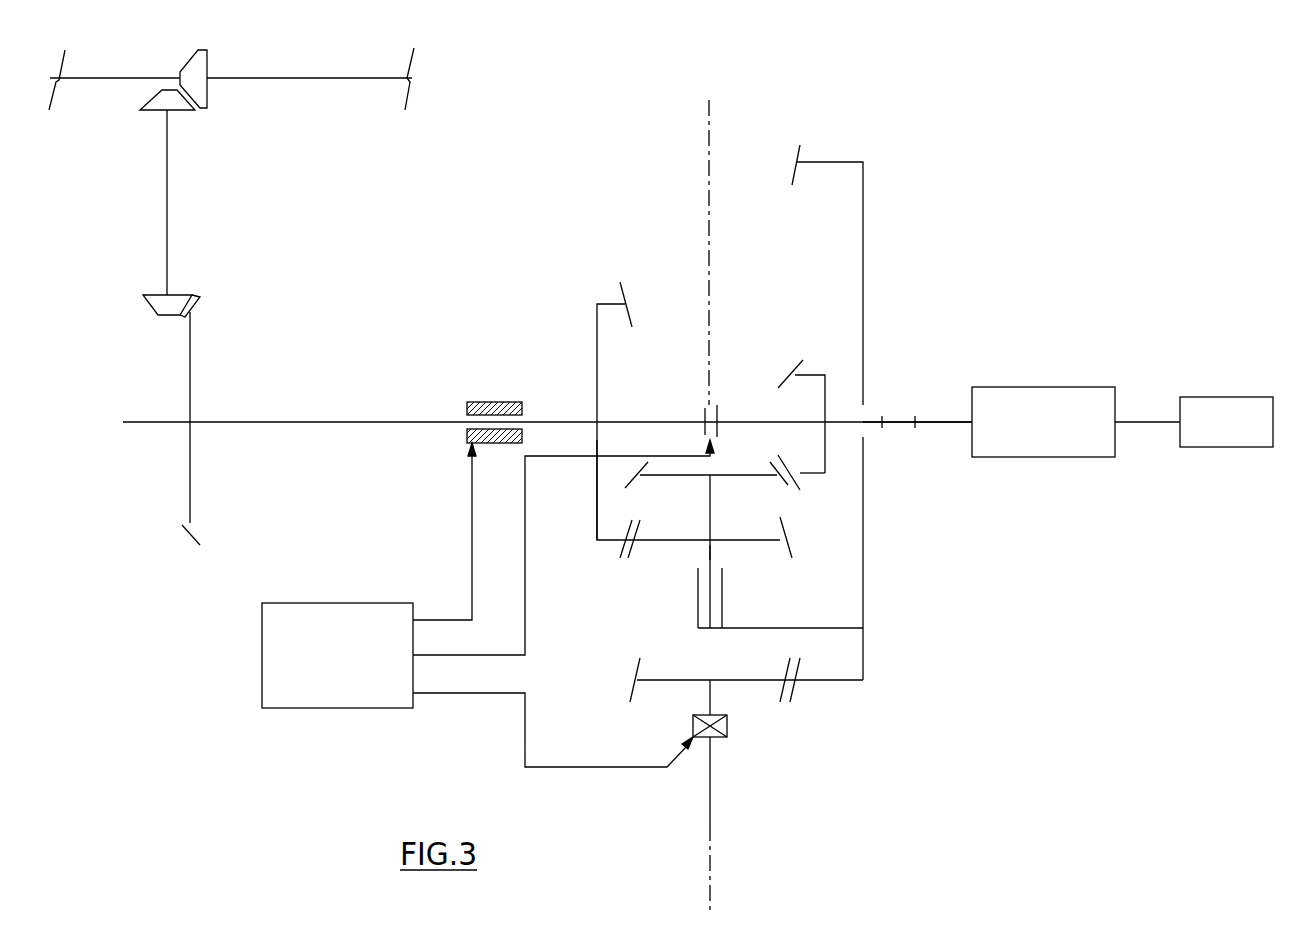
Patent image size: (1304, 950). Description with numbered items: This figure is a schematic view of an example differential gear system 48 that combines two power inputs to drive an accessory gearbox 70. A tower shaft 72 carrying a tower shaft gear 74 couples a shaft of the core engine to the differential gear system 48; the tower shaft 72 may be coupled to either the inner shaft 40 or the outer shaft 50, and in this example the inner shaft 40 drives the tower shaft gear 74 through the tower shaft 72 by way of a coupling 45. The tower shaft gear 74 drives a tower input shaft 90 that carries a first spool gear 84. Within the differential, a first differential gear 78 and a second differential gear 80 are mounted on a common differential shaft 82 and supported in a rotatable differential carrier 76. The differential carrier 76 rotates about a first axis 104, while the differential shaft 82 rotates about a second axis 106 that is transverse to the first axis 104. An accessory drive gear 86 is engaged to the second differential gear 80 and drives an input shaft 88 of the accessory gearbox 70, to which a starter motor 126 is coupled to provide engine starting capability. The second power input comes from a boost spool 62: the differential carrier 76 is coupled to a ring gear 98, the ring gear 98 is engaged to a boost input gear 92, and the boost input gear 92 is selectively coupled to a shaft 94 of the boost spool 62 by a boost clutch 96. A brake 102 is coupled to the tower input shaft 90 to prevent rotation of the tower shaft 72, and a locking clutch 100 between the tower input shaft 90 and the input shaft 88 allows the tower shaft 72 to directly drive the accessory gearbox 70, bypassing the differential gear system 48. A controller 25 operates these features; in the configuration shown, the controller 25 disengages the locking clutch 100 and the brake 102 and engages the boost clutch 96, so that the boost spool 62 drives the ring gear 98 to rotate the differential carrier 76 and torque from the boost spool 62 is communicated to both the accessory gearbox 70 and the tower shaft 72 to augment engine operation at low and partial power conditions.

The inner shaft 40 is at (248, 78).
The outer shaft 50 is at (231, 77).
The coupling 45 is at (128, 343).
The tower shaft 72 is at (170, 225).
The differential gear system 48 is at (417, 269).
The tower shaft gear 74 is at (190, 370).
The first axis 104 is at (337, 408).
The brake 102 is at (494, 402).
The controller 25 is at (310, 710).
The second axis 106 is at (711, 244).
The locking clutch 100 is at (735, 369).
The tower input shaft 90 is at (623, 398).
The first spool gear 84 is at (588, 491).
The second differential gear 80 is at (710, 515).
The accessory drive gear 86 is at (825, 475).
The first differential gear 78 is at (650, 550).
The differential shaft 82 is at (698, 556).
The differential carrier 76 is at (757, 628).
The ring gear 98 is at (866, 655).
The boost input gear 92 is at (667, 680).
The boost clutch 96 is at (758, 728).
The boost spool 62 is at (697, 782).
The shaft 94 is at (712, 797).
The input shaft 88 is at (946, 408).
The accessory gearbox 70 is at (1116, 408).
The starter motor 126 is at (1215, 448).